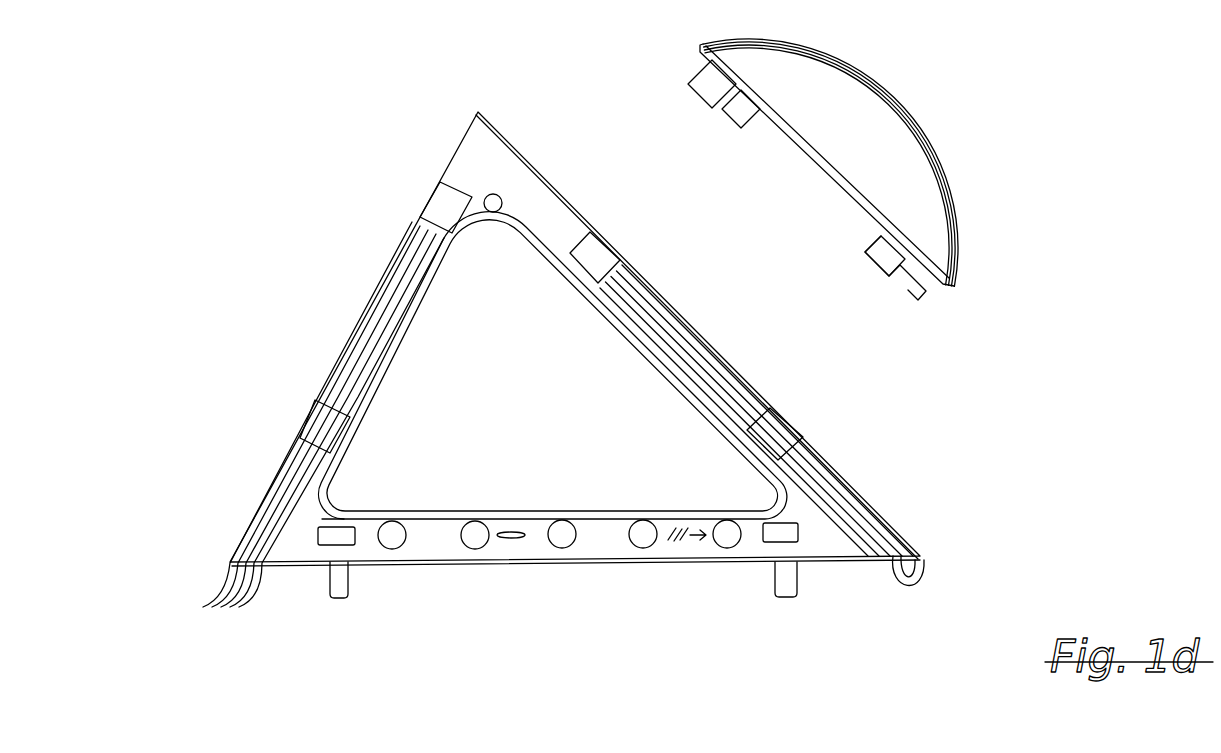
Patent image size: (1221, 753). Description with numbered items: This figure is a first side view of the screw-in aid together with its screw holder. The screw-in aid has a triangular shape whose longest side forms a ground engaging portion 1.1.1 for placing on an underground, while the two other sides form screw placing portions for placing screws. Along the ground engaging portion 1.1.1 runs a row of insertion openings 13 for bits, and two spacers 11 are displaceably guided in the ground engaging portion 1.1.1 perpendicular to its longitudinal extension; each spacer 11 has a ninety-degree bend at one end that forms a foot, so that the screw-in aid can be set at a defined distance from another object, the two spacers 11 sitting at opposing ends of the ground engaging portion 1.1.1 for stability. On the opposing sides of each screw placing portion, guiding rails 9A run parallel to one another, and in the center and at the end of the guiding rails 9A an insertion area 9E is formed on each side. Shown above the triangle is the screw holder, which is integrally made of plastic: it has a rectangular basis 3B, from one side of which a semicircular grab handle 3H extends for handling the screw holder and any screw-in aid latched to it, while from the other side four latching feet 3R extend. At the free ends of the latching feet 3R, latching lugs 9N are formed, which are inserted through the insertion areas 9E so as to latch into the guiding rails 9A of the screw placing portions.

The base body of the device 1.1.1 is at (541, 588).
The spacer 11 is at (323, 597).
The insertion opening 13 is at (673, 545).
The guiding rail 9A is at (560, 437).
The insertion area 9E is at (312, 420).
The latching lug 9N is at (862, 255).
The grab handle 3H is at (869, 206).
The basis 3B is at (807, 167).
The latching foot 3R is at (927, 302).